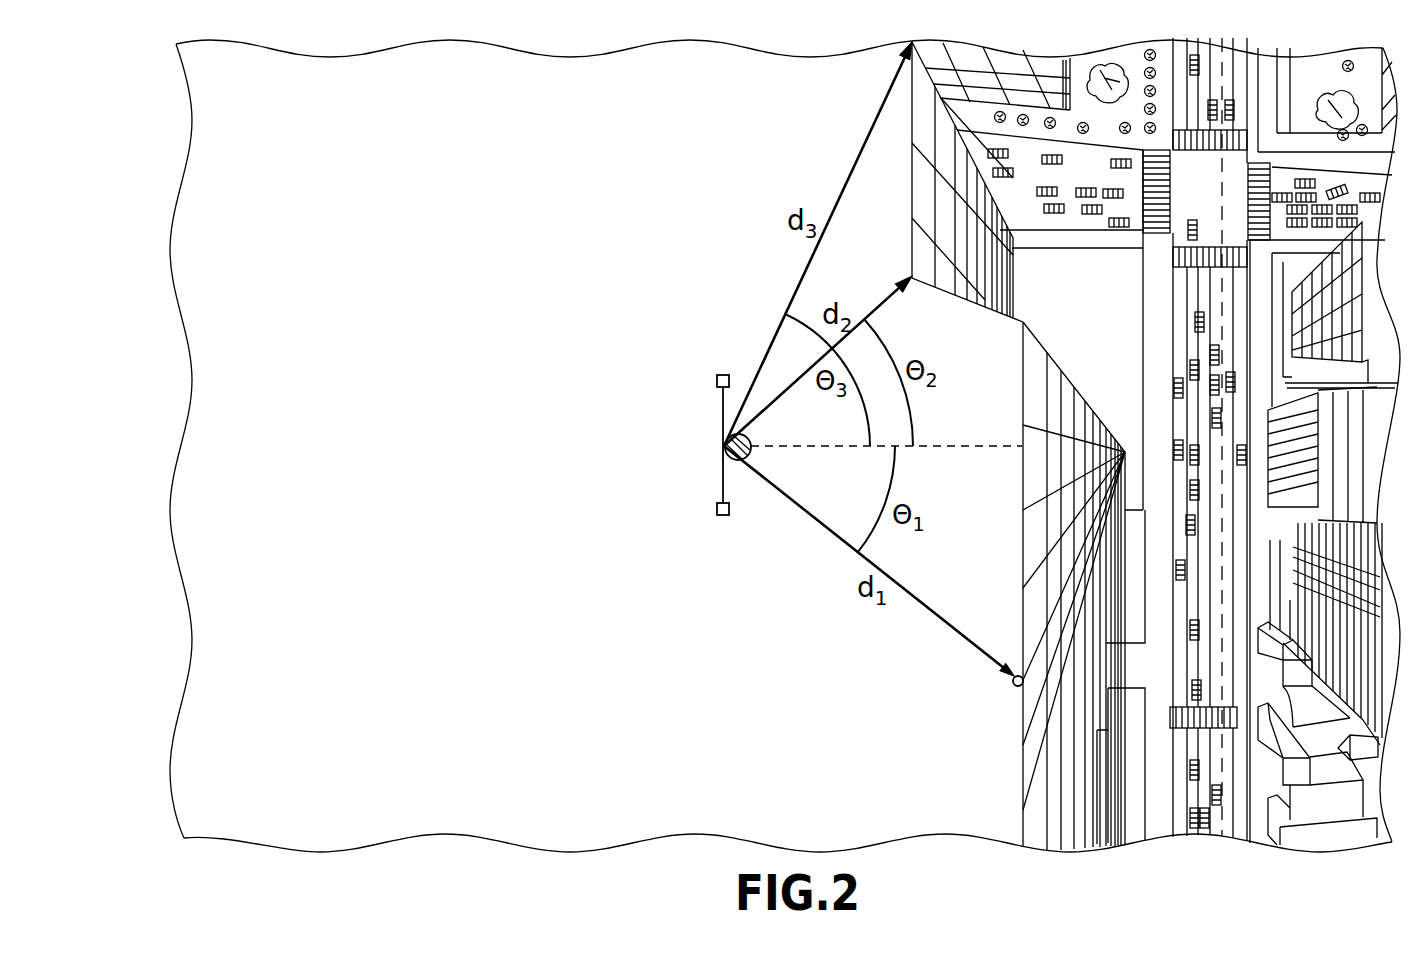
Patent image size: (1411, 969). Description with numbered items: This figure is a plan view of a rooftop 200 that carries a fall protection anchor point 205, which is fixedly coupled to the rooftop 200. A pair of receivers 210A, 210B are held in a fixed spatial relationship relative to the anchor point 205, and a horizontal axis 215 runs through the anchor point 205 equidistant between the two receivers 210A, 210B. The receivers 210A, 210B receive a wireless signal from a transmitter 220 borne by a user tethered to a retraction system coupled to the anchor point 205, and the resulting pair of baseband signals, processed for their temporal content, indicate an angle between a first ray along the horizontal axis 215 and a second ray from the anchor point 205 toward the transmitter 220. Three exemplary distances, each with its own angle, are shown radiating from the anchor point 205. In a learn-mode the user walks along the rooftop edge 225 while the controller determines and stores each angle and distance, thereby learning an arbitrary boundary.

The rooftop 200 is at (541, 273).
The fall protection anchor point 205 is at (746, 460).
The receiver 210A is at (717, 381).
The receiver 210B is at (717, 509).
The horizontal axis 215 is at (938, 455).
The transmitter 220 is at (1013, 686).
The rooftop edge 225 is at (1022, 785).